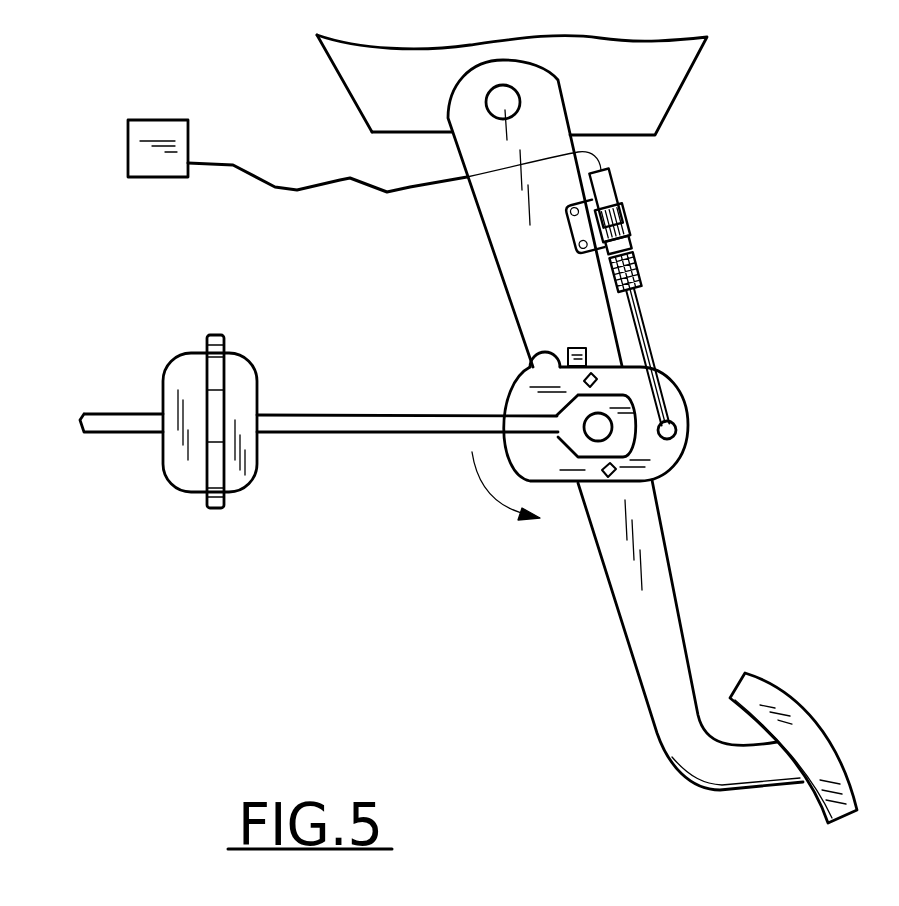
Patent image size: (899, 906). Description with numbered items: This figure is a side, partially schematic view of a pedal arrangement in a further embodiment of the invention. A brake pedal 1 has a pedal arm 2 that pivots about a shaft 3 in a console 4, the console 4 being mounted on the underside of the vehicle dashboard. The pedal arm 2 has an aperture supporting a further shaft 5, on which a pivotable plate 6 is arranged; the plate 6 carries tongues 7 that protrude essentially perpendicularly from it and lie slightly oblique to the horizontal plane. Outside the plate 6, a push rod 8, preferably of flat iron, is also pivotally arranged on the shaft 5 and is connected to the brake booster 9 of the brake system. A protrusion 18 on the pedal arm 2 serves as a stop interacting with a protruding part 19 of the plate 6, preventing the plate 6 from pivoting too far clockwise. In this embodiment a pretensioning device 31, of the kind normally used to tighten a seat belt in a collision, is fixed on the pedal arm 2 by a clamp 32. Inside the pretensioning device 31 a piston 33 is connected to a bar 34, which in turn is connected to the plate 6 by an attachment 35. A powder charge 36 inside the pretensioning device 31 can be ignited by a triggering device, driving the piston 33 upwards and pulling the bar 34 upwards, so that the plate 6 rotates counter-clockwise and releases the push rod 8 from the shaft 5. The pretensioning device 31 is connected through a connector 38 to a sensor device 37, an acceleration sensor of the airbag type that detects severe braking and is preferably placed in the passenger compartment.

The brake pedal 1 is at (655, 757).
The pedal arm 2 is at (663, 633).
The shaft 3 is at (510, 95).
The console 4 is at (643, 105).
The further shaft 5 is at (602, 432).
The plate 6 is at (680, 446).
The tongues 7 is at (597, 379).
The push rod 8 is at (355, 425).
The brake booster 9 is at (247, 453).
The protrusion 18 is at (568, 350).
The protruding part 19 is at (545, 352).
The pretensioning device 31 is at (618, 182).
The clamp 32 is at (628, 212).
The piston 33 is at (638, 252).
The bar 34 is at (647, 325).
The attachment 35 is at (678, 422).
The powder charge 36 is at (645, 276).
The sensor device 37 is at (147, 128).
The connector 38 is at (248, 167).